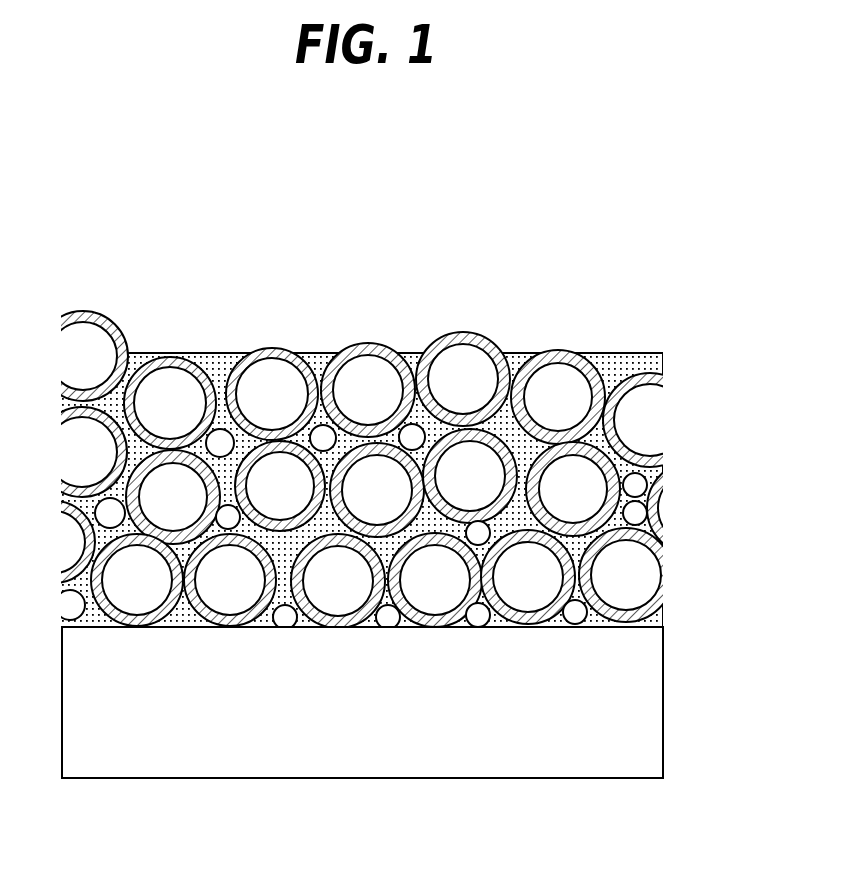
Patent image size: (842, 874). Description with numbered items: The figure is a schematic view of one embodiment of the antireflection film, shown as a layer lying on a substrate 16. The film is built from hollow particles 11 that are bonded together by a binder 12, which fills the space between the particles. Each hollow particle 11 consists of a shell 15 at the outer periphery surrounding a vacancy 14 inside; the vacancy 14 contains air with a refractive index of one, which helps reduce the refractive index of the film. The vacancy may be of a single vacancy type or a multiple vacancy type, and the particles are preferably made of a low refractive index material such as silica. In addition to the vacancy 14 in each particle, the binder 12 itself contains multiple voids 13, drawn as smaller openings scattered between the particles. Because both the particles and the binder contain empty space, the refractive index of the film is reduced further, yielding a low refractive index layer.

The hollow particles 11 is at (472, 331).
The binder 12 is at (535, 400).
The voids 13 is at (248, 410).
The vacancy 14 is at (173, 403).
The shell 15 is at (155, 357).
The substrate 16 is at (348, 748).